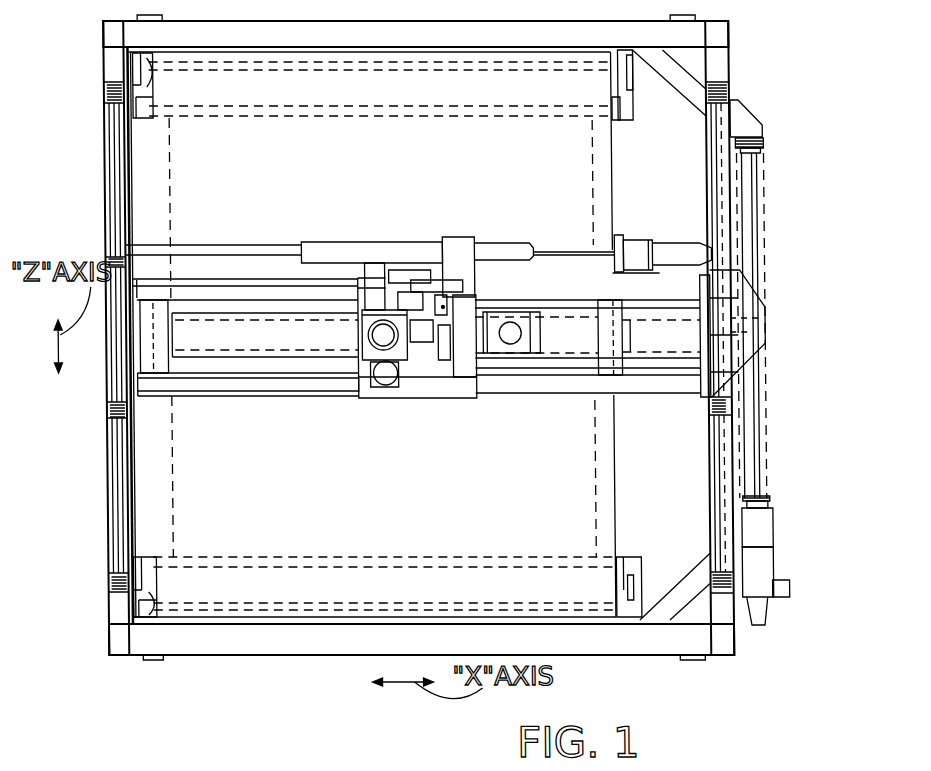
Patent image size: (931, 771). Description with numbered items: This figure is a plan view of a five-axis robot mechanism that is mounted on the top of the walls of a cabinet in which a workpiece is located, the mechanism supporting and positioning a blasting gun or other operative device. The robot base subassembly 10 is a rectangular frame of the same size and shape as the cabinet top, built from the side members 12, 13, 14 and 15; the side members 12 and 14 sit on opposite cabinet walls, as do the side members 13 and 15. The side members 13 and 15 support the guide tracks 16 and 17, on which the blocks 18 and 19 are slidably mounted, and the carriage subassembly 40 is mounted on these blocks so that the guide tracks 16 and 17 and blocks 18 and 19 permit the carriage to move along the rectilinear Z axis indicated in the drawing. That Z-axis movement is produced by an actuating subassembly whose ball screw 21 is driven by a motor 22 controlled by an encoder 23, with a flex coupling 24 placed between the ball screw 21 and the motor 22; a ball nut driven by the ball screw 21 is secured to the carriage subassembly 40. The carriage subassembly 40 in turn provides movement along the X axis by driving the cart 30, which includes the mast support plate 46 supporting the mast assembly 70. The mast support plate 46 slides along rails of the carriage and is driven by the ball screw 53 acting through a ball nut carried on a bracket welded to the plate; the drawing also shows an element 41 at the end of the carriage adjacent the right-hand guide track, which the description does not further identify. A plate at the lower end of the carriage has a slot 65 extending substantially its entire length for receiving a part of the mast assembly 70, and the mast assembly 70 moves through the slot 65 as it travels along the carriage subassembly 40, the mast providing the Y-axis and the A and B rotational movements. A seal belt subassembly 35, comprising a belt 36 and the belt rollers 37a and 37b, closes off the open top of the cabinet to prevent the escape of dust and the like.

The robot base subassembly 10 is at (74, 572).
The side member 12 is at (125, 33).
The side member 13 is at (722, 68).
The side member 14 is at (654, 645).
The side member 15 is at (104, 500).
The guide track 16 is at (114, 455).
The guide track 17 is at (718, 211).
The block 18 is at (126, 420).
The block 19 is at (708, 402).
The ball screw 21 is at (753, 227).
The motor 22 is at (766, 575).
The encoder 23 is at (764, 612).
The flex coupling 24 is at (766, 520).
The cart 30 is at (429, 404).
The seal belt subassembly 35 is at (136, 522).
The belt 36 is at (413, 525).
The belt roller 37a is at (624, 625).
The belt roller 37b is at (637, 97).
The carriage subassembly 40 is at (526, 365).
The cam block 41 is at (744, 357).
The mast support plate 46 is at (453, 388).
The ball screw 53 is at (573, 250).
The slot 65 is at (276, 340).
The mast assembly 70 is at (407, 256).